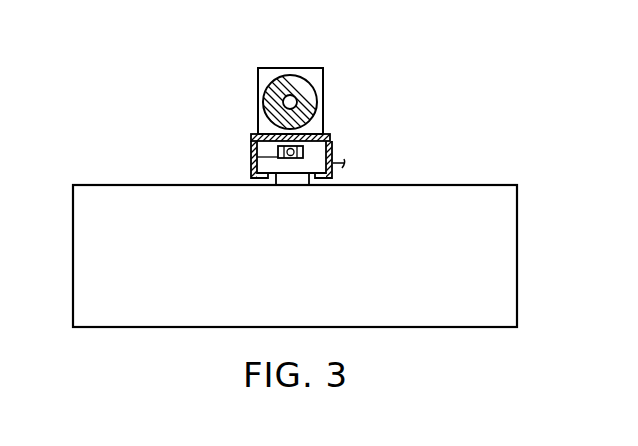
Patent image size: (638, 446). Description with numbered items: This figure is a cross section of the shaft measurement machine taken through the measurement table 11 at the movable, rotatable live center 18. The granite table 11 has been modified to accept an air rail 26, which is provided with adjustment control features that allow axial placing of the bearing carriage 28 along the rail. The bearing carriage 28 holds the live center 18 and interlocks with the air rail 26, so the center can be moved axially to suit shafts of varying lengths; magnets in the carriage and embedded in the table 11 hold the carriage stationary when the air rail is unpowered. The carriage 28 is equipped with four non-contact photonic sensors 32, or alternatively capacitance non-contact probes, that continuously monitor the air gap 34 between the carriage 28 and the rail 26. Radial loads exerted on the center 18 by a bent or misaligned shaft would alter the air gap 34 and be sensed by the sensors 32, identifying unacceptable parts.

The measurement table 11 is at (322, 286).
The live center 18 is at (301, 85).
The air rail 26 is at (266, 161).
The bearing carriage 28 is at (252, 143).
The non-contact photonic sensors 32 is at (328, 136).
The air gap 34 is at (251, 147).